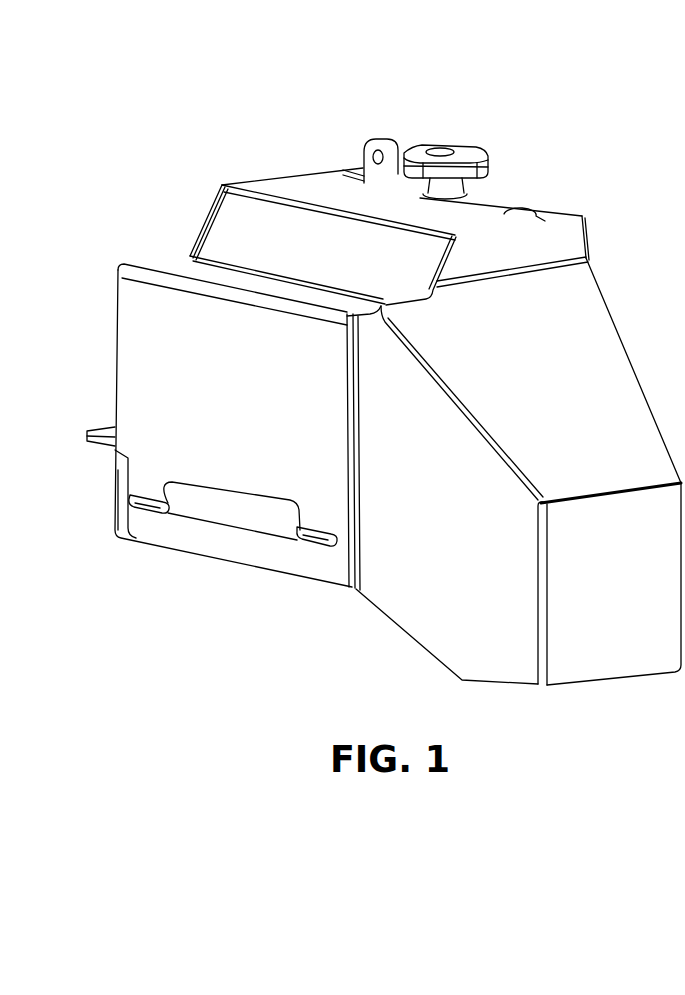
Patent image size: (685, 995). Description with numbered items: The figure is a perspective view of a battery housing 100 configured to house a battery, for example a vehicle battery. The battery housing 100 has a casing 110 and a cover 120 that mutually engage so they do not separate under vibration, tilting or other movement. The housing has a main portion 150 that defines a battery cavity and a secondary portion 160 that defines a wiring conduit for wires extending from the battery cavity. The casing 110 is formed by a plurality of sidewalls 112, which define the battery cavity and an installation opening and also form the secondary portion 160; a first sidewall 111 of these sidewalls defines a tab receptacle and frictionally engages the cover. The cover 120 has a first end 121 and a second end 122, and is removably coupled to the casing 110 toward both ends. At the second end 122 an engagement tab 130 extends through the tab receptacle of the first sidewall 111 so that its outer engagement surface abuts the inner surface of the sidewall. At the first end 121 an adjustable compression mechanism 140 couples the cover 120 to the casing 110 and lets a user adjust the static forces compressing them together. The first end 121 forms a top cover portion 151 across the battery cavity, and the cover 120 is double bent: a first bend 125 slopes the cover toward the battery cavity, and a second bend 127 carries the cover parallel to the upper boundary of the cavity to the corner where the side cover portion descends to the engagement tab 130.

The battery housing 100 is at (194, 114).
The casing 110 is at (608, 648).
The first sidewall 111 is at (141, 530).
The sidewalls 112 is at (552, 623).
The cover 120 is at (172, 203).
The first end 121 is at (523, 200).
The second end 122 is at (108, 493).
The first bend 125 is at (220, 184).
The second bend 127 is at (207, 292).
The engagement tab 130 is at (298, 535).
The adjustable compression mechanism 140 is at (456, 134).
The main portion 150 is at (80, 249).
The top cover portion 151 is at (465, 205).
The secondary portion 160 is at (598, 330).